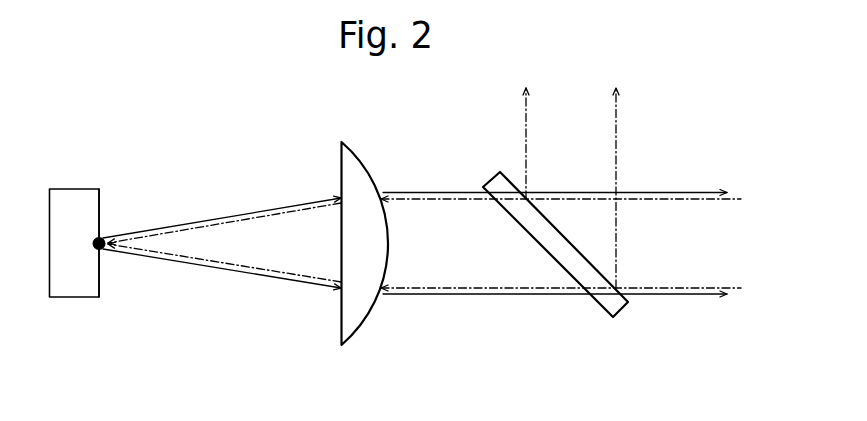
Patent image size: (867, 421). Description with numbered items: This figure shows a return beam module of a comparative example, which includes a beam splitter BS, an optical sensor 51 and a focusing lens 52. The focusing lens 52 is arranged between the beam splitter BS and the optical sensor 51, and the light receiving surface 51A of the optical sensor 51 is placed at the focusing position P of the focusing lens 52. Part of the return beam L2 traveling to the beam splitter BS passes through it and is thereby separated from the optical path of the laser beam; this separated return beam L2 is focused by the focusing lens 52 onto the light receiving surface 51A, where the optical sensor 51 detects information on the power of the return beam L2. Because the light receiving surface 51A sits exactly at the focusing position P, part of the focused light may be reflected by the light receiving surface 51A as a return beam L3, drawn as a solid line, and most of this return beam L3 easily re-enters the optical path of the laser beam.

The optical sensor 51 is at (74, 189).
The light receiving surface 51A is at (99, 210).
The focusing position P is at (102, 253).
The return beam L3 is at (202, 219).
The focusing lens 52 is at (340, 166).
The beam splitter BS is at (488, 180).
The return beam L2 is at (689, 289).